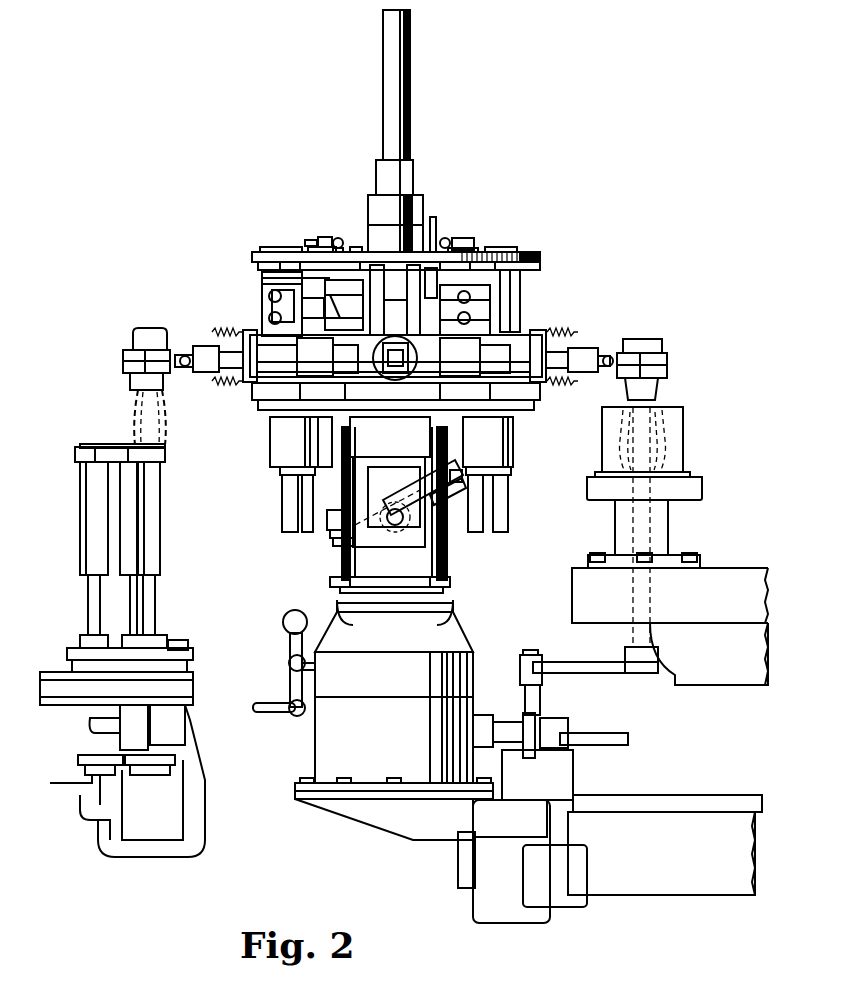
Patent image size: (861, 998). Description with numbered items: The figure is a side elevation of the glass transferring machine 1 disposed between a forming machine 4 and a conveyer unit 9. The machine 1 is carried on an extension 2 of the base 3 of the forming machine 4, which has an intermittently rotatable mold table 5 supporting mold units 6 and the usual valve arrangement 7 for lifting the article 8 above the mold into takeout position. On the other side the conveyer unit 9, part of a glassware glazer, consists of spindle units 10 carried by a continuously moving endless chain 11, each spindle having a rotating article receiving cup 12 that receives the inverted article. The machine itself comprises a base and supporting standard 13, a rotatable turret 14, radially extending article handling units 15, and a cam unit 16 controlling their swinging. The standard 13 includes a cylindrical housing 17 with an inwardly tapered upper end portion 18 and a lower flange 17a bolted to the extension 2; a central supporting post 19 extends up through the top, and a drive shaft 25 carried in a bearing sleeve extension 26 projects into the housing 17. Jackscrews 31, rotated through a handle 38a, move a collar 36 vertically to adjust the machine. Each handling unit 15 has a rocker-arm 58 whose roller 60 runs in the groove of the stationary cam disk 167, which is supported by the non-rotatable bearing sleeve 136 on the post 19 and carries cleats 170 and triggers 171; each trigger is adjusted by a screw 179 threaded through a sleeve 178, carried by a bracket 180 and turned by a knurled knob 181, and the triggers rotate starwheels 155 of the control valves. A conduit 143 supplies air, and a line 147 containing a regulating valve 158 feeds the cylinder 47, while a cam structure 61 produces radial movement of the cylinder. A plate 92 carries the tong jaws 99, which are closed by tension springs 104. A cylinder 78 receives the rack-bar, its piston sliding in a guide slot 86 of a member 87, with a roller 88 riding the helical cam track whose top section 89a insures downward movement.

The supporting post 19 is at (395, 142).
The bearing sleeve 136 is at (381, 238).
The cam unit 16 is at (258, 252).
The cam disk 167 is at (518, 252).
The cleats 170 is at (278, 250).
The screw 179 is at (316, 246).
The sleeve 178 is at (322, 240).
The bracket 180 is at (338, 238).
The knurled knob 181 is at (345, 247).
The conduit 143 is at (436, 230).
The triggers 171 is at (493, 252).
The glass transferring machine 1 is at (540, 250).
The roller 60 is at (538, 268).
The starwheel 155 is at (262, 272).
The regulating valve 158 is at (313, 308).
The rocker-arm 58 is at (522, 296).
The line 147 is at (394, 356).
The cylinder 47 is at (322, 376).
The tension springs 104 is at (228, 340).
The plate 92 is at (568, 340).
The article handling units 15 is at (266, 341).
The cam structure 61 is at (250, 393).
The tong jaw 99 is at (130, 357).
The article 8 is at (660, 388).
The article receiving cup 12 is at (162, 455).
The spindle units 10 is at (152, 510).
The conveyer unit 9 is at (162, 624).
The endless chain 11 is at (152, 750).
The mold units 6 is at (690, 492).
The valve arrangement 7 is at (652, 530).
The mold table 5 is at (740, 604).
The forming machine 4 is at (730, 664).
The cylinder 78 is at (286, 435).
The turret 14 is at (318, 438).
The member 87 is at (278, 476).
The guide slot 86 is at (298, 499).
The jackscrews 31 is at (340, 565).
The roller 88 is at (330, 524).
The top section 89a is at (342, 560).
The collar 36 is at (450, 583).
The tapered upper end portion 18 is at (350, 628).
The base and supporting standard 13 is at (460, 632).
The housing 17 is at (440, 680).
The flange 17a is at (368, 788).
The extension 2 is at (440, 824).
The base 3 is at (670, 864).
The handle 38a is at (275, 705).
The bearing sleeve extension 26 is at (512, 728).
The drive shaft 25 is at (596, 733).